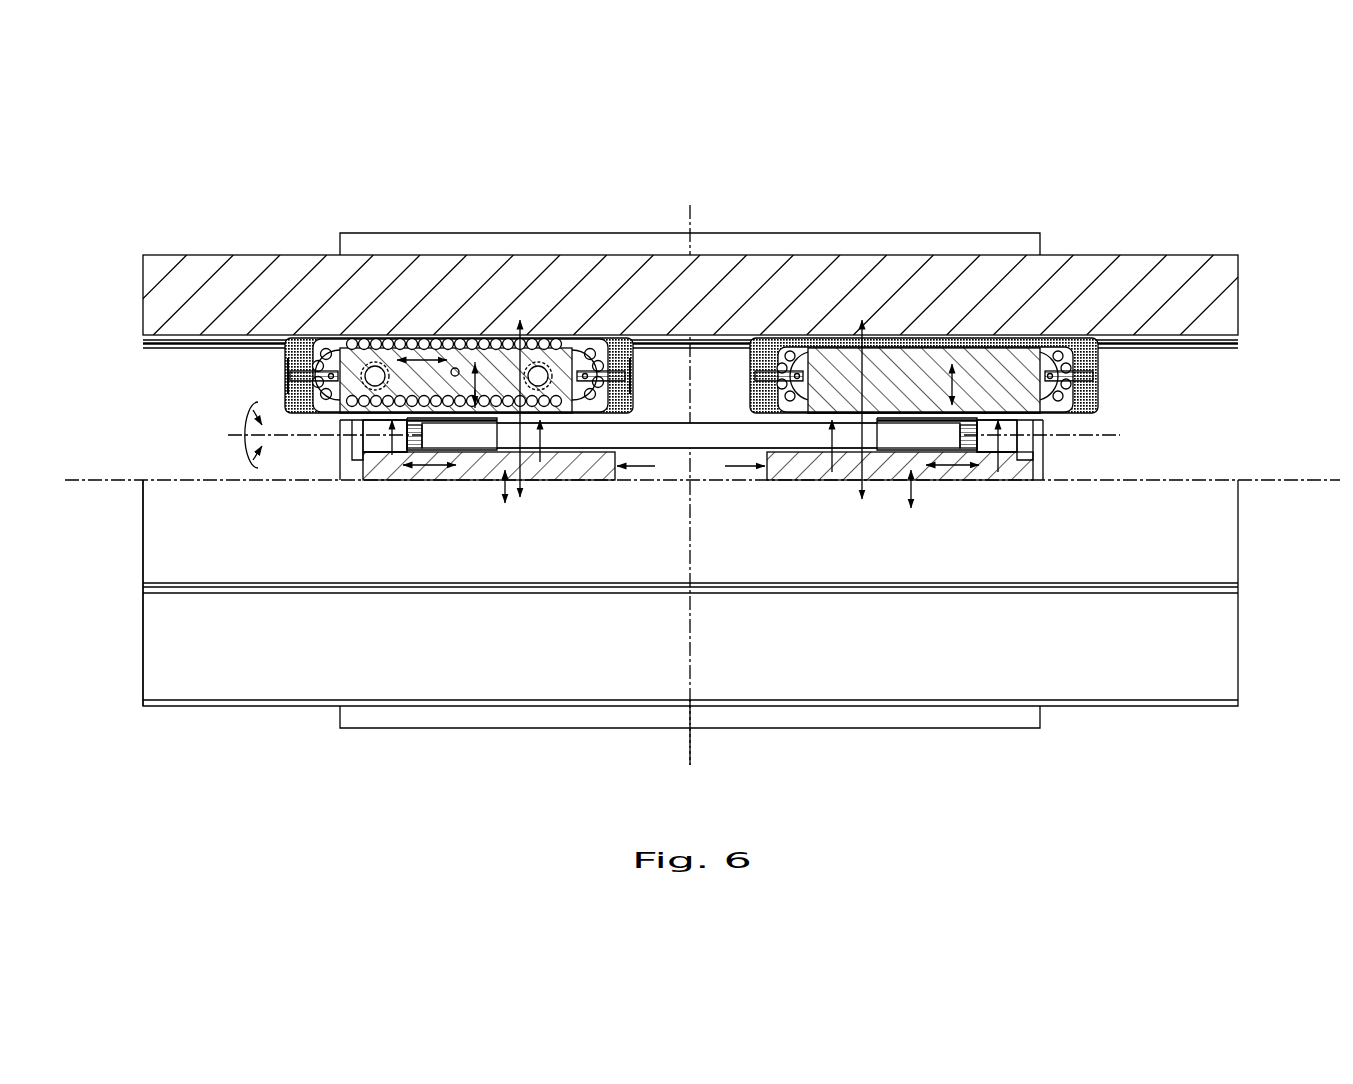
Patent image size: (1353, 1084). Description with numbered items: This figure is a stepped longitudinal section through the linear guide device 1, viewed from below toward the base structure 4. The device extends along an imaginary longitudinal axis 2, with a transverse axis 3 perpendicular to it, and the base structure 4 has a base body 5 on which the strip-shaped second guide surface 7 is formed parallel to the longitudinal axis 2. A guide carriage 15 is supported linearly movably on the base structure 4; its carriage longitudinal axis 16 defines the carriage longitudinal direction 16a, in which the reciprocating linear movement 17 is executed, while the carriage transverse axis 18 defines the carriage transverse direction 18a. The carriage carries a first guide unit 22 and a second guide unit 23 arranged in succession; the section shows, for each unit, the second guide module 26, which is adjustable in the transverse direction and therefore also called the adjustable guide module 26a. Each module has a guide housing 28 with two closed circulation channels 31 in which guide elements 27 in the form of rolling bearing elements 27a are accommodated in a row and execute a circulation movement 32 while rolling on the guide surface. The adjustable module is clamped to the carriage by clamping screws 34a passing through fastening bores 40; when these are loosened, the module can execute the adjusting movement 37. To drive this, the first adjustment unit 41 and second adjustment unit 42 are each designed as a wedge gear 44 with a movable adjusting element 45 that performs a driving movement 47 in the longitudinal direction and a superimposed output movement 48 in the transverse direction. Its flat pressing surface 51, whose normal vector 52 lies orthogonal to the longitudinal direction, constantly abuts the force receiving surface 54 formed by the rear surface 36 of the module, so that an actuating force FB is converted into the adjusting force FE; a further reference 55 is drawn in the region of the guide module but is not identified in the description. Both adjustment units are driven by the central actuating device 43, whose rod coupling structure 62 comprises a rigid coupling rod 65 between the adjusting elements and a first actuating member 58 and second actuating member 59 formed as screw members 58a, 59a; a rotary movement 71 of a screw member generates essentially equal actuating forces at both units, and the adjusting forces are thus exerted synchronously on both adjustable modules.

The linear guide device 1 is at (1152, 180).
The longitudinal axis 2 is at (75, 483).
The transverse axis 3 is at (688, 217).
The base structure 4 is at (1217, 271).
The base body 5 is at (155, 642).
The second guide surface 7 is at (198, 348).
The guide carriage 15 is at (1124, 437).
The carriage longitudinal axis 16 is at (702, 459).
The carriage longitudinal direction 16a is at (1265, 478).
The linear movement 17 is at (945, 199).
The carriage transverse axis 18 is at (738, 736).
The carriage transverse direction 18a is at (693, 738).
The first guide unit 22 is at (448, 520).
The second guide unit 23 is at (935, 524).
The second guide module 26 is at (709, 283).
The adjustable guide module 26a is at (485, 335).
The guide element 27 is at (458, 297).
The rolling bearing elements 27a is at (396, 338).
The guide housing 28 is at (556, 336).
The circulation channels 31 is at (325, 336).
The circulation movement 32 is at (434, 336).
The clamping screws 34a is at (835, 336).
The rear surface 36 is at (731, 478).
The force receiving surface 54 is at (391, 424).
The adjusting movement 37 is at (460, 405).
The fastening bore 40 is at (815, 336).
The first adjustment unit 41 is at (331, 478).
The second adjustment unit 42 is at (993, 480).
The wedge gear 44 is at (375, 467).
The central actuating device 43 is at (707, 455).
The movable adjusting element 45 is at (594, 474).
The driving movement 47 is at (416, 470).
The output movement 48 is at (697, 427).
The pressing surface 51 is at (566, 336).
The normal vector 52 is at (527, 470).
The preload direction 55 is at (531, 336).
The first actuating member 58 is at (454, 550).
The screw member 58a is at (488, 440).
The second actuating member 59 is at (891, 557).
The screw member 59a is at (892, 440).
The rod coupling structure 62 is at (706, 420).
The coupling rod 65 is at (664, 430).
The rotary movement 71 is at (255, 421).
The adjusting force FE is at (544, 458).
The actuating force FB is at (650, 480).